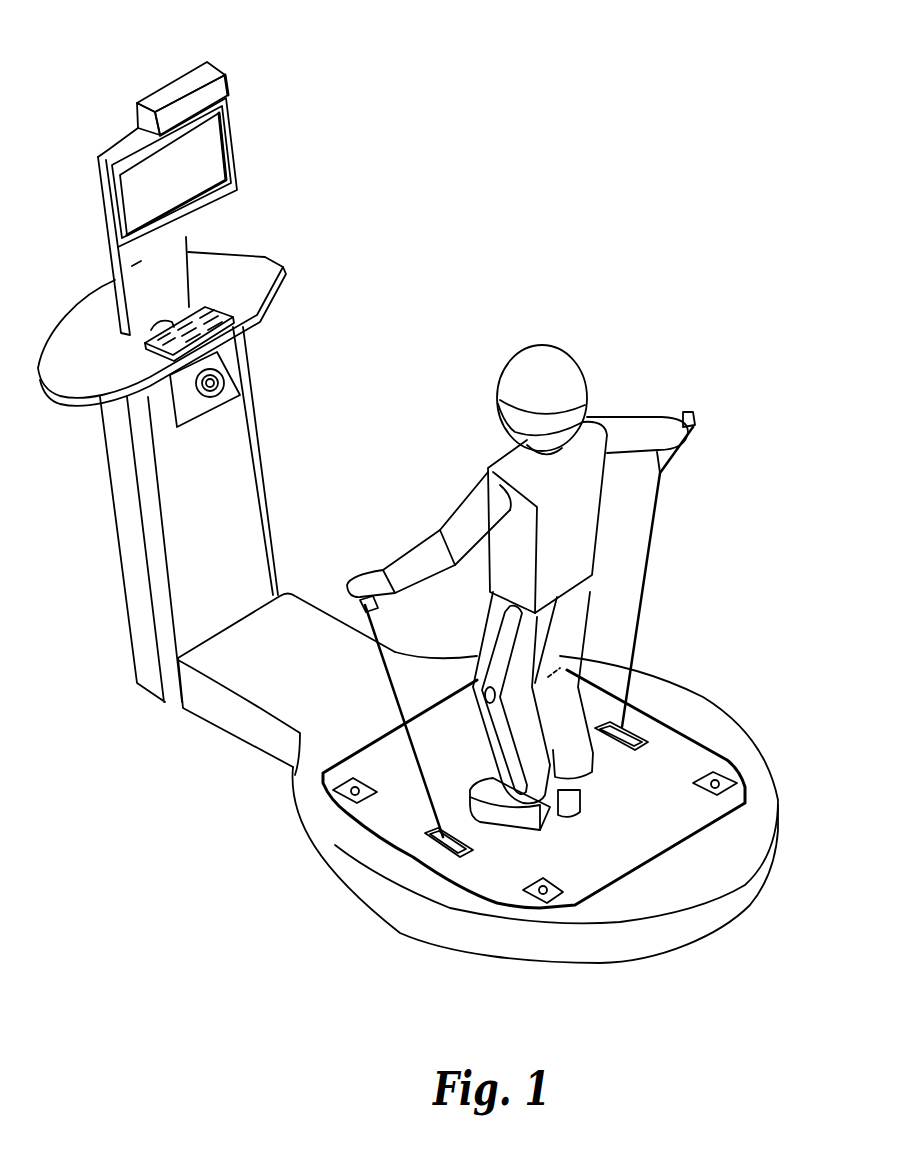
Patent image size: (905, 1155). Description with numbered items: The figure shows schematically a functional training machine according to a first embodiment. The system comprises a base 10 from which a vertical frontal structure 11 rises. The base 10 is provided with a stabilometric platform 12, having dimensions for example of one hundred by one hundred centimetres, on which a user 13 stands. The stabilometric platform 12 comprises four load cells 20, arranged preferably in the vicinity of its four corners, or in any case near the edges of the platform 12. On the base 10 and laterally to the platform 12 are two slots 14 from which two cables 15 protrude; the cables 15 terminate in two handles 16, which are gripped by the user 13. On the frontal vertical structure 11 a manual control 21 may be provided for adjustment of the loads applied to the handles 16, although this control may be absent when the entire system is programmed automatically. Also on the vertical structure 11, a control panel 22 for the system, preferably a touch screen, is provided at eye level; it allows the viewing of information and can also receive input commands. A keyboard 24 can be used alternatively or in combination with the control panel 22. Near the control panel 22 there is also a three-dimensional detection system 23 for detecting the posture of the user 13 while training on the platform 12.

The base 10 is at (400, 910).
The vertical frontal structure 11 is at (227, 450).
The stabilometric platform 12 is at (682, 753).
The user 13 is at (463, 520).
The slots 14 is at (632, 740).
The cables 15 is at (657, 520).
The handles 16 is at (697, 422).
The load cells 20 is at (727, 783).
The manual control 21 is at (220, 385).
The control panel 22 is at (203, 153).
The 3D detection system 23 is at (182, 83).
The keyboard 24 is at (195, 320).